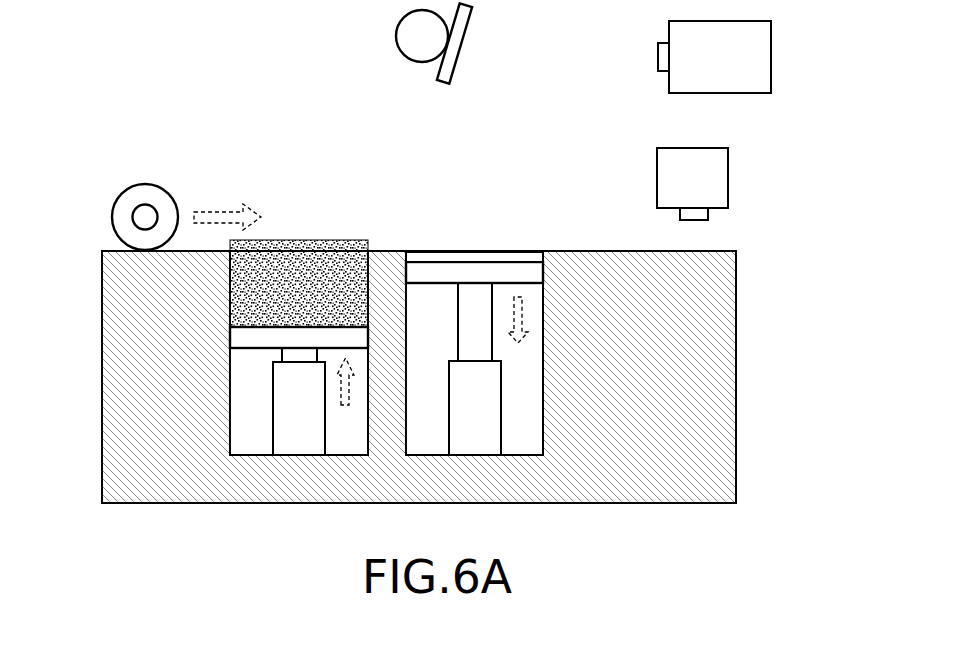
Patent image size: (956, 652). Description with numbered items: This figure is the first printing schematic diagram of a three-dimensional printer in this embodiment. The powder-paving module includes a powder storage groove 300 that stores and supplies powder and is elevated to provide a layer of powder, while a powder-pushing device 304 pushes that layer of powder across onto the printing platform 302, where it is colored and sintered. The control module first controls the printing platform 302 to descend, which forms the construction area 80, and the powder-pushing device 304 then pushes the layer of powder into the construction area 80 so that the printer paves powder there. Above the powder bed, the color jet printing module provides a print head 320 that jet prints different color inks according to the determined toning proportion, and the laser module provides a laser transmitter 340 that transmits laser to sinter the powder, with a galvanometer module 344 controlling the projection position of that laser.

The construction area 80 is at (479, 258).
The powder storage groove 300 is at (245, 340).
The printing platform 302 is at (534, 274).
The powder-pushing device 304 is at (144, 197).
The print head 320 is at (723, 188).
The laser transmitter 340 is at (752, 53).
The galvanometer module 344 is at (410, 29).